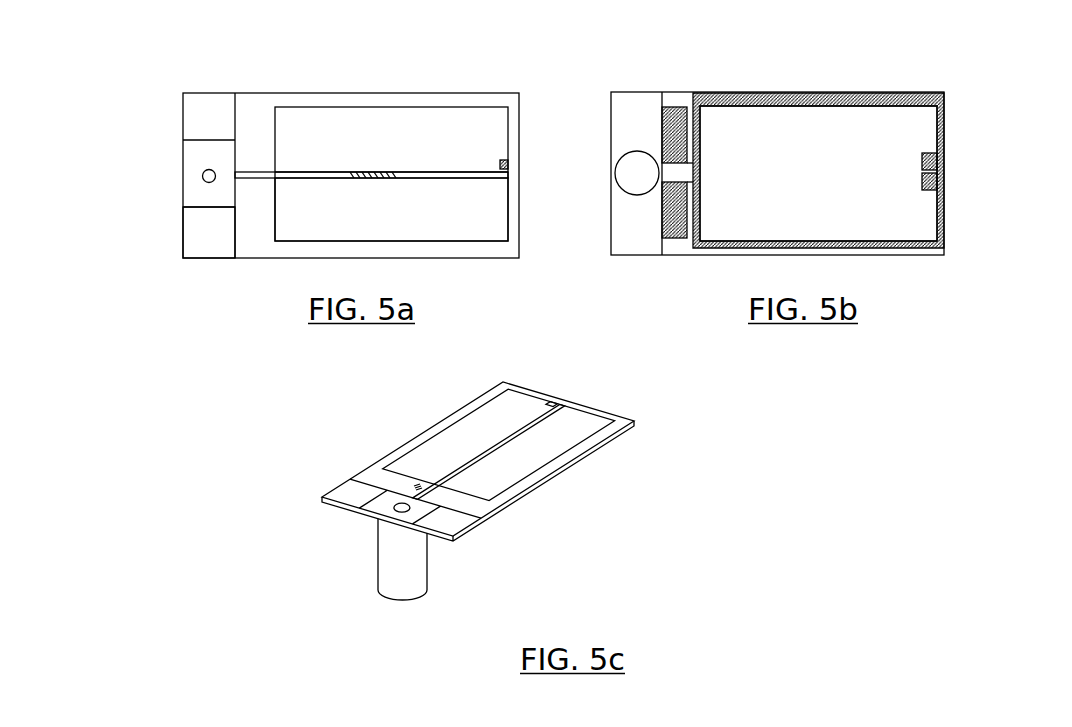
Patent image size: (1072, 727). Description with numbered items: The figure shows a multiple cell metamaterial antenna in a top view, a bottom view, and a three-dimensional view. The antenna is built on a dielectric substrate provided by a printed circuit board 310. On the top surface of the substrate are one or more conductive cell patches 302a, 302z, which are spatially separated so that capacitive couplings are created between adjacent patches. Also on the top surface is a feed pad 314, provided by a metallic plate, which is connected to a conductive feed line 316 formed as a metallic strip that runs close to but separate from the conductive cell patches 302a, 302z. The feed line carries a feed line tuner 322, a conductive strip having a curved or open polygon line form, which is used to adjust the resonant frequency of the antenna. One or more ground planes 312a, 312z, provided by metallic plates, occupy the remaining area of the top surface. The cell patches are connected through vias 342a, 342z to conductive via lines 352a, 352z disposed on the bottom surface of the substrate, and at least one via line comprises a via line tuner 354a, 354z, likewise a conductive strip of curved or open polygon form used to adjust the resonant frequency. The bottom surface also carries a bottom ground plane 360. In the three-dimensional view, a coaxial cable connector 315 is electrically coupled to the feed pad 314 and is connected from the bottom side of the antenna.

In FIG. 5a, the printed circuit board 310 is at (503, 100).
In FIG. 5a, the ground plane 312a is at (203, 118).
In FIG. 5a, the ground plane 312z is at (198, 225).
In FIG. 5a, the feed pad 314 is at (221, 157).
In FIG. 5a, the conductive feed line 316 is at (258, 173).
In FIG. 5a, the feed line tuner 322 is at (398, 163).
In FIG. 5a, the conductive cell patch 302a is at (430, 127).
In FIG. 5a, the conductive cell patch 302z is at (462, 200).
In FIG. 5a, the via 342a is at (503, 160).
In FIG. 5b, the via 342a is at (930, 160).
In FIG. 5b, the via 342z is at (935, 176).
In FIG. 5b, the conductive via line 352a is at (793, 100).
In FIG. 5b, the conductive via line 352z is at (843, 225).
In FIG. 5b, the via line tuner 354a is at (678, 112).
In FIG. 5b, the via line tuner 354z is at (678, 200).
In FIG. 5b, the bottom ground plane 360 is at (632, 125).
In FIG. 5c, the coaxial cable connector 315 is at (427, 563).